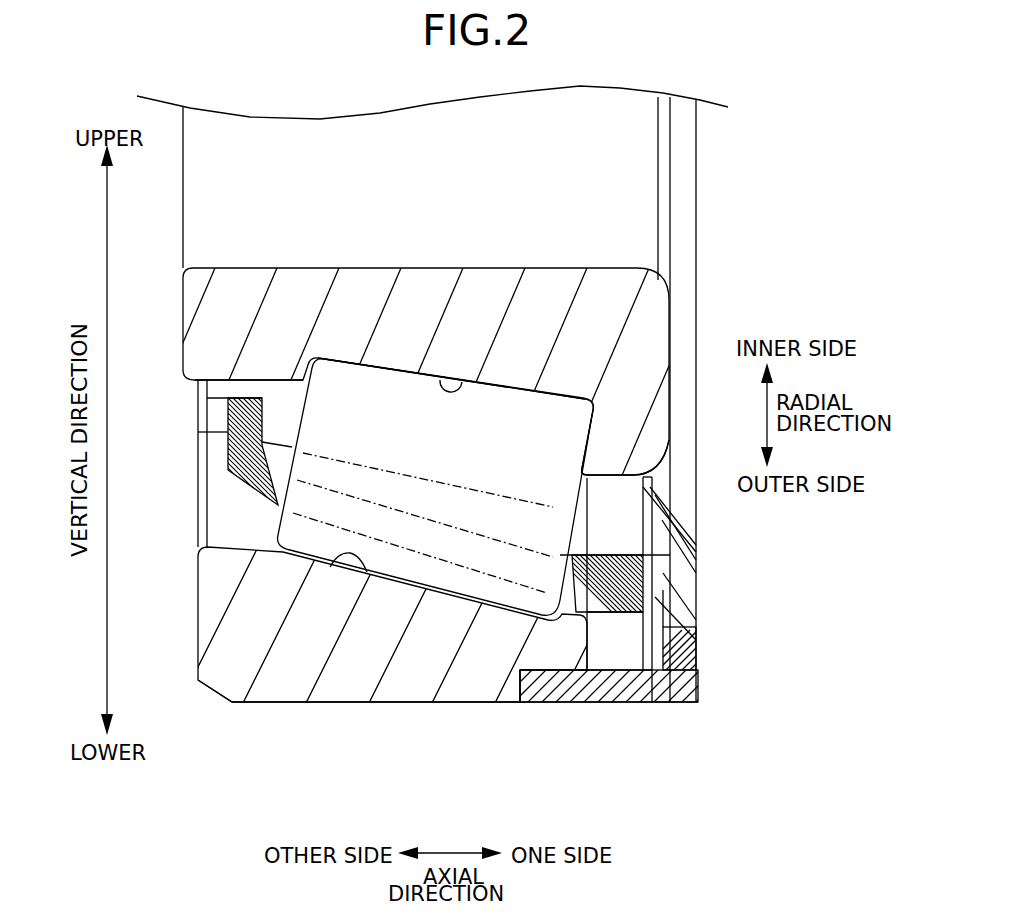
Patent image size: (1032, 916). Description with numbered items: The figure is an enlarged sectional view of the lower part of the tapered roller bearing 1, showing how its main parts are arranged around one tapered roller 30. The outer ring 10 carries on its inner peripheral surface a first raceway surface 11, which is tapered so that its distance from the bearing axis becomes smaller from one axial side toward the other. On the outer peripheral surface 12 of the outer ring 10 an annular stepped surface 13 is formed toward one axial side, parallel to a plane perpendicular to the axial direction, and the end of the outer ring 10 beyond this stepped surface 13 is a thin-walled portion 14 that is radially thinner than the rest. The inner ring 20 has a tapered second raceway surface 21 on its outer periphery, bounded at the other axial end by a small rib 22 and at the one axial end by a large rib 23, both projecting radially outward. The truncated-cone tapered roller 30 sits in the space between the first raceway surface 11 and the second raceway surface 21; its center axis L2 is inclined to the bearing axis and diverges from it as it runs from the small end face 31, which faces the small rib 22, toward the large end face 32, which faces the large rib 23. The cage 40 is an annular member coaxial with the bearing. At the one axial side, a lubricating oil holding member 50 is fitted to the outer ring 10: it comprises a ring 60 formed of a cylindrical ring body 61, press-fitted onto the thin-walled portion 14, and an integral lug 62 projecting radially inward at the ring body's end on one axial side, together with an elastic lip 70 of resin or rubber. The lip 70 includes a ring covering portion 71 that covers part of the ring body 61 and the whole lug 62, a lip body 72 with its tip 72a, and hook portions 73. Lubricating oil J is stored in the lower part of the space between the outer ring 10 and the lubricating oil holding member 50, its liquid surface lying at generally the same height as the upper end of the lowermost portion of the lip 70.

The tapered roller bearing 1 is at (189, 762).
The outer ring 10 is at (378, 702).
The first raceway surface 11 is at (335, 556).
The outer peripheral surface 12 is at (305, 703).
The stepped surface 13 is at (527, 707).
The thin-walled portion 14 is at (508, 705).
The inner ring 20 is at (563, 277).
The second raceway surface 21 is at (463, 378).
The small rib 22 is at (243, 380).
The large rib 23 is at (633, 437).
The tapered roller 30 is at (397, 400).
The small end face 31 is at (275, 525).
The large end face 32 is at (583, 482).
The cage 40 is at (228, 477).
The lubricating oil holding member 50 is at (644, 792).
The ring 60 is at (605, 707).
The ring body 61 is at (568, 707).
The lug 62 is at (700, 656).
The lip 70 is at (630, 707).
The ring covering portion 71 is at (648, 707).
The lip body 72 is at (698, 597).
The lip tip 72a is at (700, 566).
The hook portion 73 is at (700, 523).
The lubricating oil J is at (625, 637).
The center axis of the tapered roller L2 is at (165, 422).